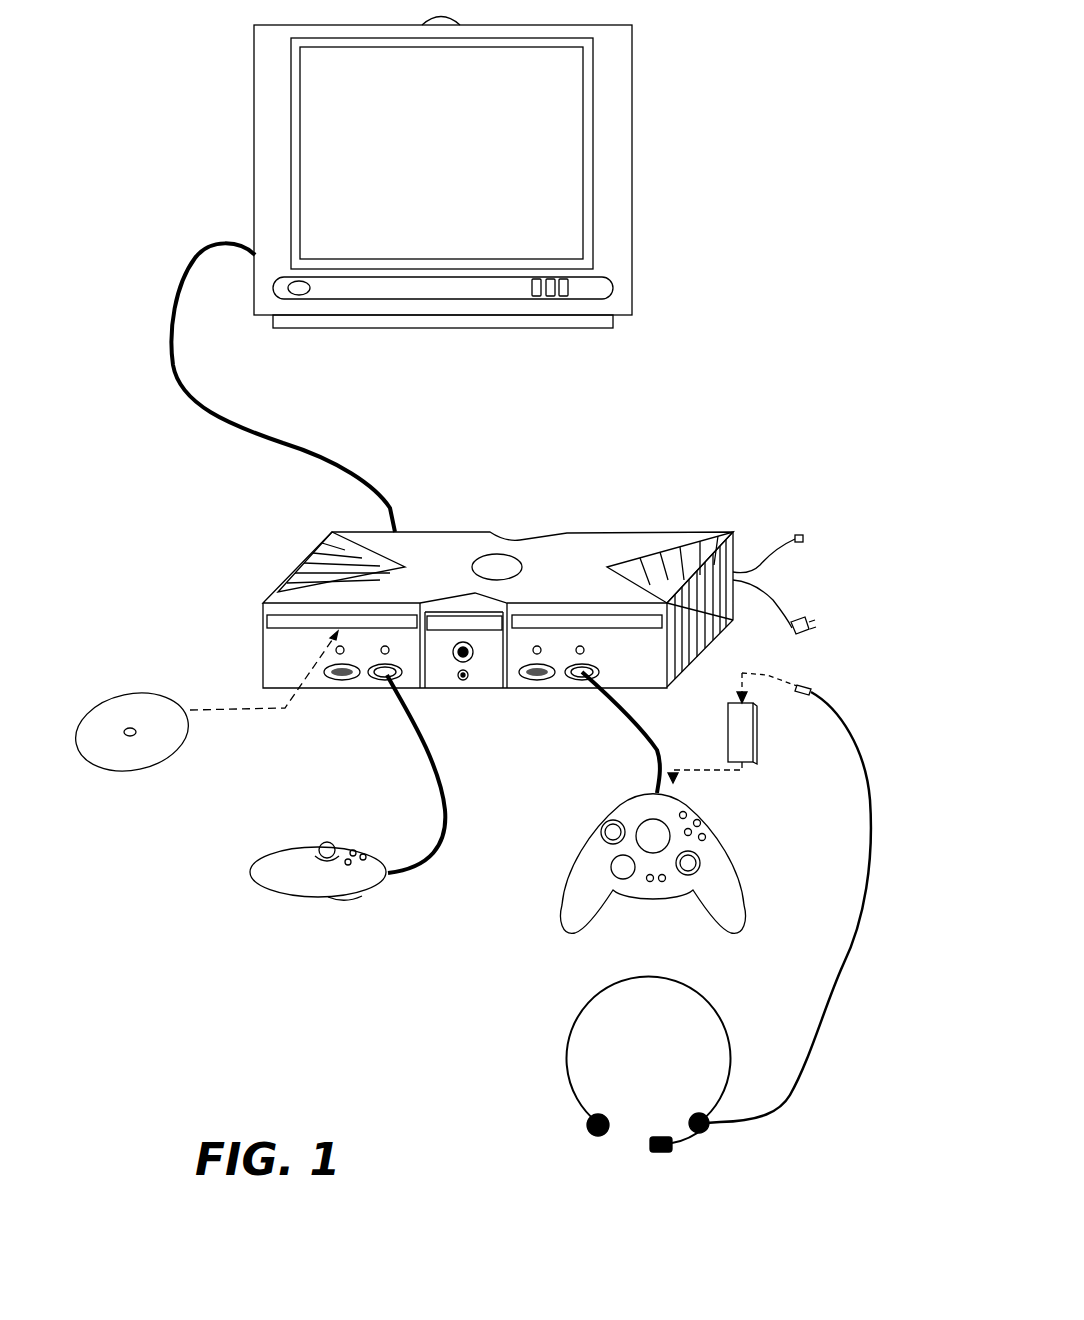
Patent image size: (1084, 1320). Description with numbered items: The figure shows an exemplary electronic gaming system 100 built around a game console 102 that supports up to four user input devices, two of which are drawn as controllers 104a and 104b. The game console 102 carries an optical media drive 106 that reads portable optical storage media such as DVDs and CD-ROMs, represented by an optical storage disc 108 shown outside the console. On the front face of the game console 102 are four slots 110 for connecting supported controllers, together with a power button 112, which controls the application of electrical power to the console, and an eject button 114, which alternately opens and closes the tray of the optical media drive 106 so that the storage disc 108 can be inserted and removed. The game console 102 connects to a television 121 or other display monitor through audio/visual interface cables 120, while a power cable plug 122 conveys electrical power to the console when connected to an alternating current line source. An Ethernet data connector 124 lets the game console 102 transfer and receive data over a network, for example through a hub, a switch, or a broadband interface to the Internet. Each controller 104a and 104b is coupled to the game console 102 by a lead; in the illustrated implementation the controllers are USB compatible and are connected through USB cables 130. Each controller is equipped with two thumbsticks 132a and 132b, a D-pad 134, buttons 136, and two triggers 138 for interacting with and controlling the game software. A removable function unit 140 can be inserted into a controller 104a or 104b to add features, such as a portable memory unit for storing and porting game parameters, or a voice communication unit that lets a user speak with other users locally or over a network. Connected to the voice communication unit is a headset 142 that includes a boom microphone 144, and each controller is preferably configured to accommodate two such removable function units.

The electronic gaming system 100 is at (633, 454).
The game console 102 is at (353, 532).
The controller 104a is at (325, 900).
The controller 104b is at (575, 930).
The optical media drive 106 is at (265, 622).
The optical storage disc 108 is at (140, 770).
The slots 110 is at (380, 680).
The power button 112 is at (464, 681).
The eject button 114 is at (463, 640).
The audio/visual interface cables 120 is at (388, 489).
The television 121 is at (632, 128).
The power cable plug 122 is at (817, 617).
The Ethernet data connector 124 is at (772, 558).
The USB cables 130 is at (435, 772).
The thumbstick 132a is at (601, 832).
The thumbstick 132b is at (327, 843).
The D-pad 134 is at (611, 867).
The buttons 136 is at (700, 823).
The triggers 138 is at (360, 898).
The removable function unit 140 is at (755, 757).
The headset 142 is at (570, 1082).
The boom microphone 144 is at (662, 1153).